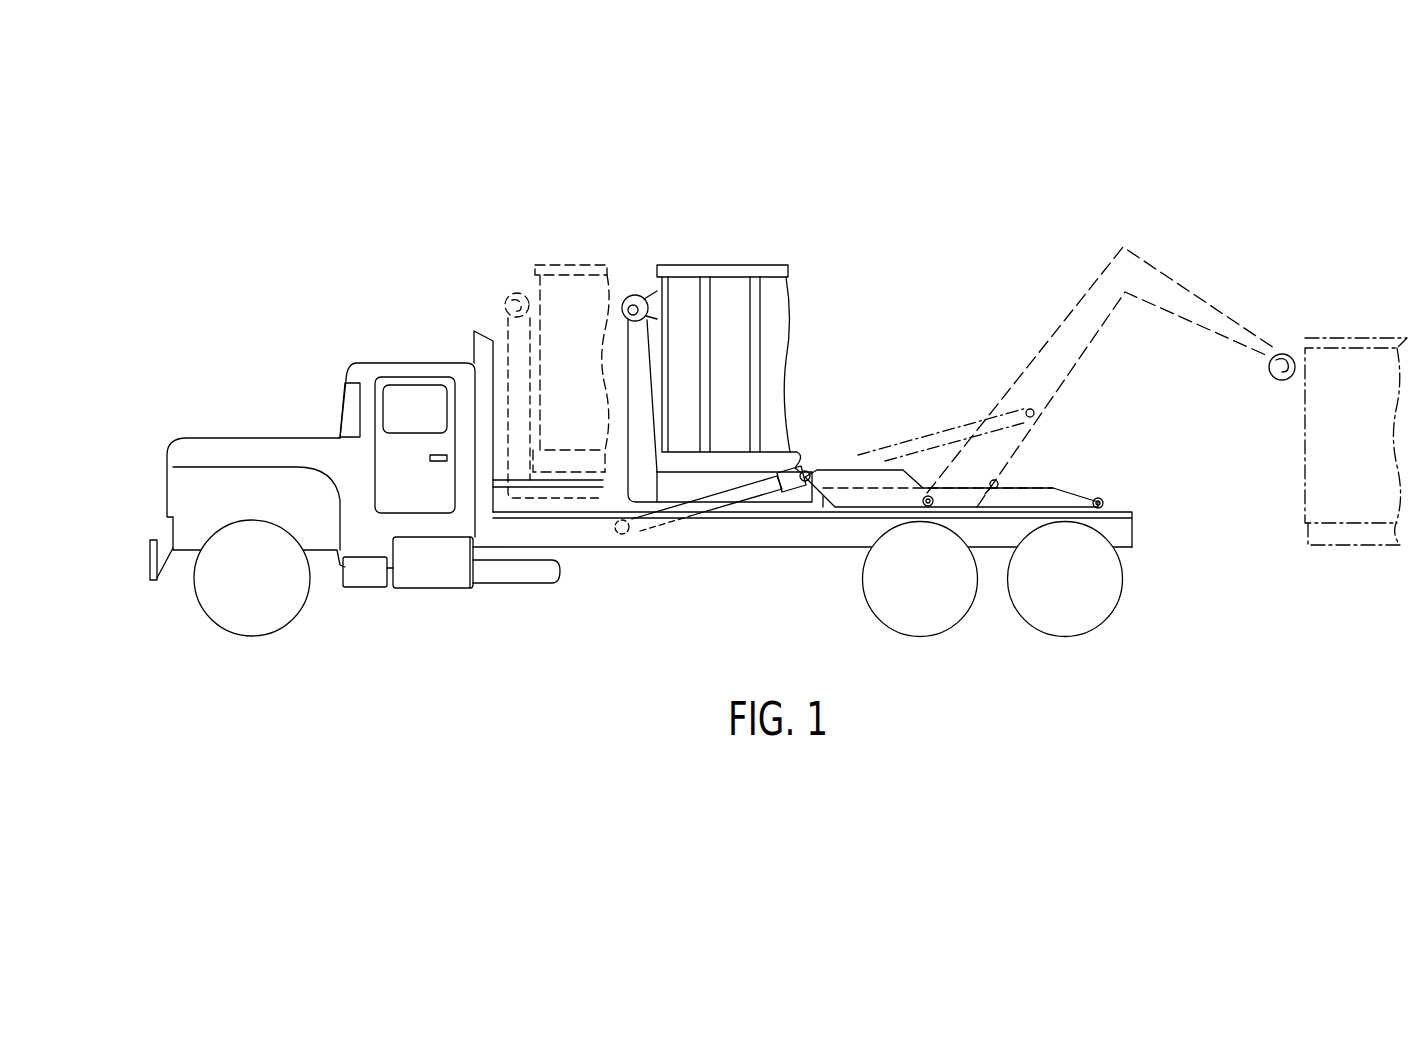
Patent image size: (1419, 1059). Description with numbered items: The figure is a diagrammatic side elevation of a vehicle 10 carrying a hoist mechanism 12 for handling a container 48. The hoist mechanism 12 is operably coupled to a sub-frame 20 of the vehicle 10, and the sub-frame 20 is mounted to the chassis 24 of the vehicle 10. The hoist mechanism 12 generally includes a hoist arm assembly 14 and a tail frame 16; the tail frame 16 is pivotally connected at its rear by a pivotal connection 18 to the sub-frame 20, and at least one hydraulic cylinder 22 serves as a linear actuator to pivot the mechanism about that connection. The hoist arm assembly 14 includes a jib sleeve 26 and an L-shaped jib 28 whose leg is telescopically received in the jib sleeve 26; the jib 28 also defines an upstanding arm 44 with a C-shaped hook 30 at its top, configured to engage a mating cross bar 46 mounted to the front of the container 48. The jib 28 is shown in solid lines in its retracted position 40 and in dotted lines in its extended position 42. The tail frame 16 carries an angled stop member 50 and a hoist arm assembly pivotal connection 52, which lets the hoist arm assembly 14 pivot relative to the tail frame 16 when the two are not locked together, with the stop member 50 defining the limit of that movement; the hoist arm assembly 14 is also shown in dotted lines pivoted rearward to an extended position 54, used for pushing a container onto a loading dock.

The vehicle 10 is at (278, 387).
The hoist mechanism 12 is at (862, 258).
The hoist arm assembly 14 is at (813, 468).
The tail frame 16 is at (1020, 500).
The pivotal connection 18 is at (1108, 500).
The sub-frame 20 is at (603, 505).
The hydraulic cylinder 22 is at (745, 503).
The chassis 24 is at (635, 547).
The jib sleeve 26 is at (707, 488).
The L-shaped jib 28 is at (627, 343).
The hook 30 is at (648, 297).
The retracted position 40 is at (655, 250).
The extended position 42 is at (498, 300).
The upstanding arm 44 is at (640, 415).
The cross bar 46 is at (655, 296).
The container 48 is at (750, 265).
The angled stop member 50 is at (996, 483).
The hoist arm assembly pivotal connection 52 is at (925, 505).
The extended position 54 is at (1173, 280).